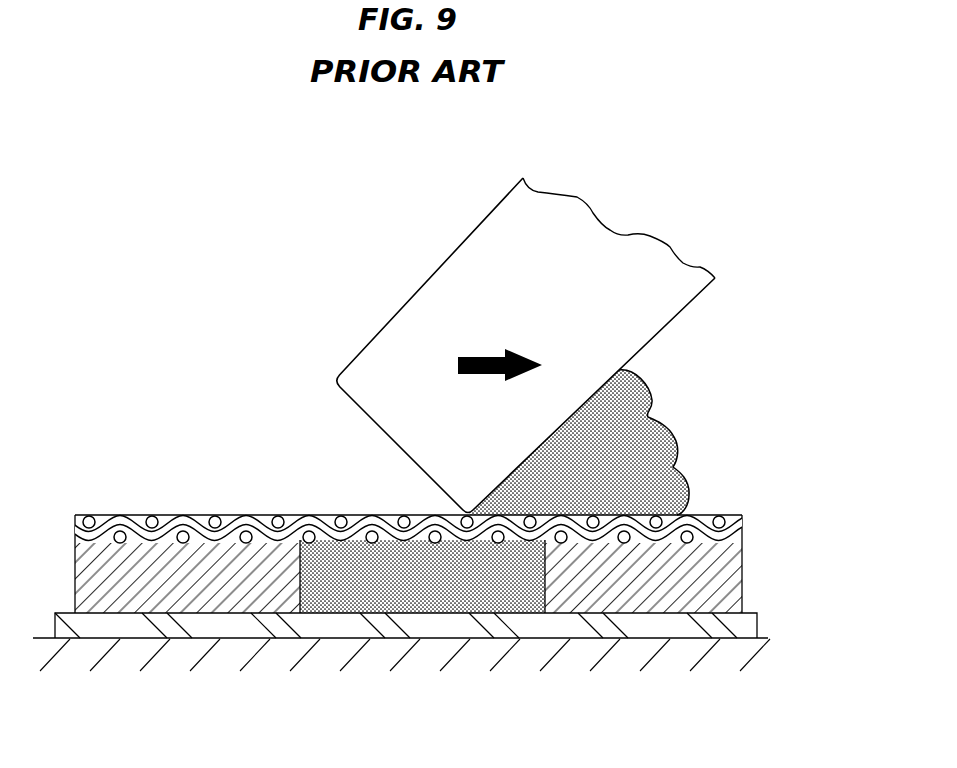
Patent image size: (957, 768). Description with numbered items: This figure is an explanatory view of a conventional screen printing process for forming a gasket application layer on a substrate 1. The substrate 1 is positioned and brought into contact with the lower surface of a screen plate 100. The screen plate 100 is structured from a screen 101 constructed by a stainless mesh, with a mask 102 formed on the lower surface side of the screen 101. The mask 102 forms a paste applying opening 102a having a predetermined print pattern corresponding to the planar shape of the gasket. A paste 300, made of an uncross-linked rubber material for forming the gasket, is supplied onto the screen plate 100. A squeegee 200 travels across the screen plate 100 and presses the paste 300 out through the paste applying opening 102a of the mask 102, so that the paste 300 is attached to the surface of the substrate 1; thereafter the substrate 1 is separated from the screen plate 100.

The substrate 1 is at (590, 623).
The screen plate 100 is at (403, 565).
The screen 101 is at (232, 498).
The mask 102 is at (408, 592).
The paste applying opening 102a is at (300, 578).
The squeegee 200 is at (482, 253).
The paste 300 is at (677, 438).